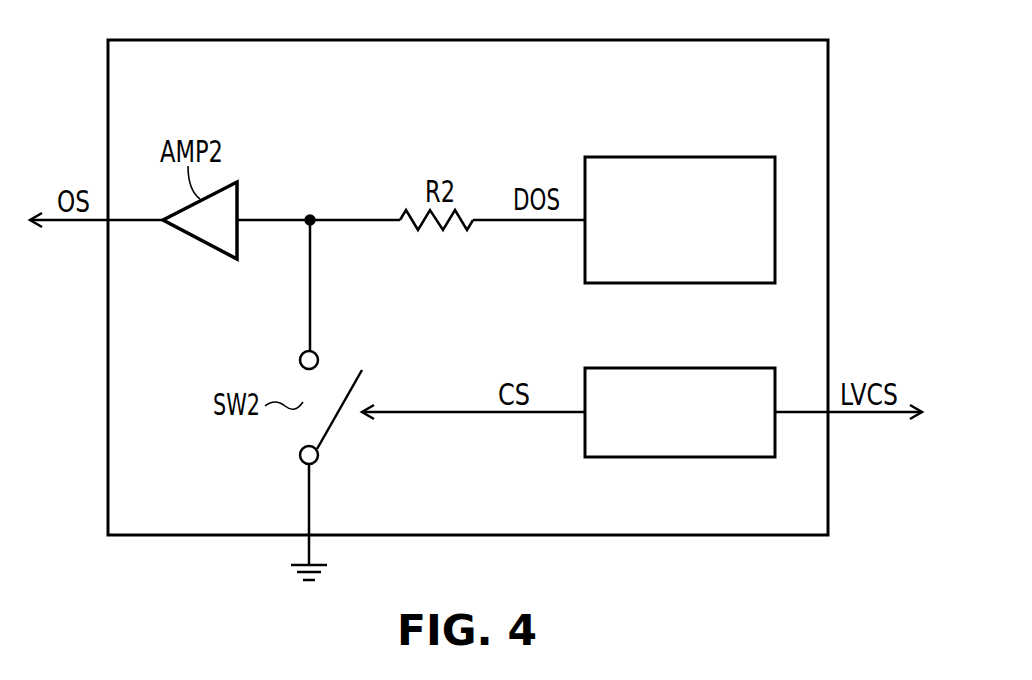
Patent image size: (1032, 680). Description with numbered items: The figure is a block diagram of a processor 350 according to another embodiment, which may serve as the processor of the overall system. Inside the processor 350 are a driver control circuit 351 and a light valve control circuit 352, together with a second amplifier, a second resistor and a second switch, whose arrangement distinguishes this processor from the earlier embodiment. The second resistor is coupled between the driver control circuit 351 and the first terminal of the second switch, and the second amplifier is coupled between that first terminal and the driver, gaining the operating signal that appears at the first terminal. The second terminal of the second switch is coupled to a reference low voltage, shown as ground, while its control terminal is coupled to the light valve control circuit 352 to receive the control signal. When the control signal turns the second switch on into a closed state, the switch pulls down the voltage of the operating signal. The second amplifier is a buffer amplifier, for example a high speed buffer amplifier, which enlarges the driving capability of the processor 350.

The processor 350 is at (733, 40).
The driver control circuit 351 is at (735, 157).
The light valve control circuit 352 is at (735, 368).